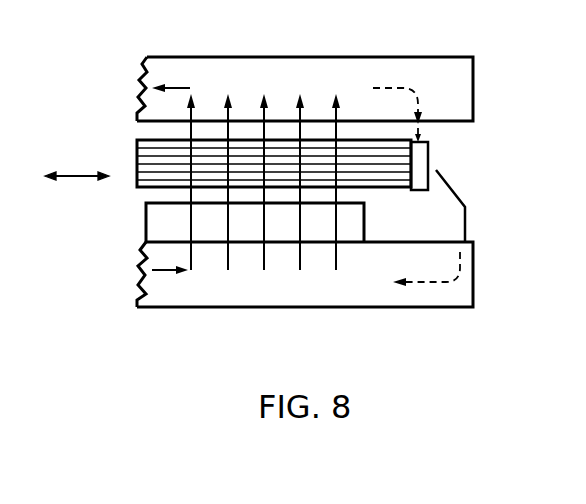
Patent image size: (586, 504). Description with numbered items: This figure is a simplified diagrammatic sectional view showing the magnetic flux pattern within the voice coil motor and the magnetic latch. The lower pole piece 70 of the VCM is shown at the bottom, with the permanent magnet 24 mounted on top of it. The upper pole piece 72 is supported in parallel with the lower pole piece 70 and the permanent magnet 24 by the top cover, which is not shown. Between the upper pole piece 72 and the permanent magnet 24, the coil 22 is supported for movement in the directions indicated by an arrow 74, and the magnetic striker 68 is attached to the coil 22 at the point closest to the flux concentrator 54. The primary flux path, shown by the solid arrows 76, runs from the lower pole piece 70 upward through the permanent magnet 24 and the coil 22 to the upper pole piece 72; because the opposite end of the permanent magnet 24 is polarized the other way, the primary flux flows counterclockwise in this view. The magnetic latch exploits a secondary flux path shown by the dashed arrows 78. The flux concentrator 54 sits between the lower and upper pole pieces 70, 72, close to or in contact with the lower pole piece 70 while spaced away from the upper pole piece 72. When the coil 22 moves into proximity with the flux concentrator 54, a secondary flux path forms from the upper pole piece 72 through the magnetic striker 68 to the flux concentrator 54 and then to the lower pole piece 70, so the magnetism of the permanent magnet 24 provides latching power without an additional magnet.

The coil 22 is at (137, 153).
The permanent magnet 24 is at (146, 218).
The flux concentrator 54 is at (468, 212).
The magnetic striker 68 is at (425, 157).
The lower pole piece 70 is at (135, 283).
The upper pole piece 72 is at (140, 62).
The arrow 74 is at (43, 167).
The solid arrows 76 is at (332, 92).
The dashed arrows 78 is at (401, 85).